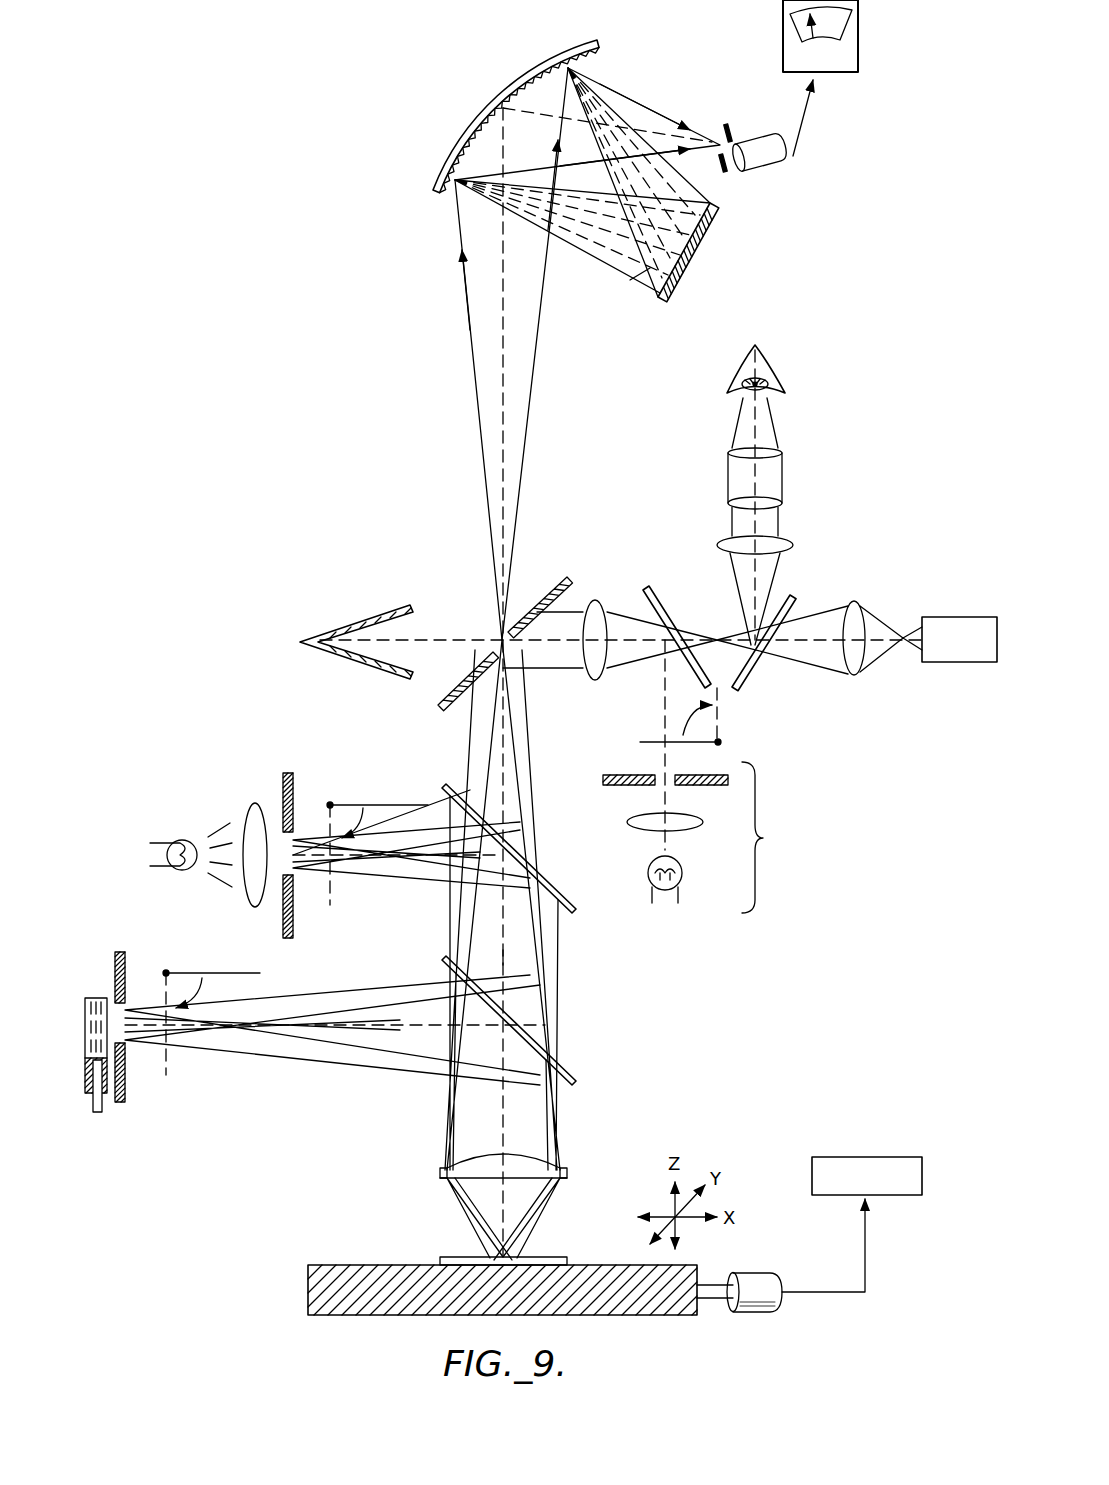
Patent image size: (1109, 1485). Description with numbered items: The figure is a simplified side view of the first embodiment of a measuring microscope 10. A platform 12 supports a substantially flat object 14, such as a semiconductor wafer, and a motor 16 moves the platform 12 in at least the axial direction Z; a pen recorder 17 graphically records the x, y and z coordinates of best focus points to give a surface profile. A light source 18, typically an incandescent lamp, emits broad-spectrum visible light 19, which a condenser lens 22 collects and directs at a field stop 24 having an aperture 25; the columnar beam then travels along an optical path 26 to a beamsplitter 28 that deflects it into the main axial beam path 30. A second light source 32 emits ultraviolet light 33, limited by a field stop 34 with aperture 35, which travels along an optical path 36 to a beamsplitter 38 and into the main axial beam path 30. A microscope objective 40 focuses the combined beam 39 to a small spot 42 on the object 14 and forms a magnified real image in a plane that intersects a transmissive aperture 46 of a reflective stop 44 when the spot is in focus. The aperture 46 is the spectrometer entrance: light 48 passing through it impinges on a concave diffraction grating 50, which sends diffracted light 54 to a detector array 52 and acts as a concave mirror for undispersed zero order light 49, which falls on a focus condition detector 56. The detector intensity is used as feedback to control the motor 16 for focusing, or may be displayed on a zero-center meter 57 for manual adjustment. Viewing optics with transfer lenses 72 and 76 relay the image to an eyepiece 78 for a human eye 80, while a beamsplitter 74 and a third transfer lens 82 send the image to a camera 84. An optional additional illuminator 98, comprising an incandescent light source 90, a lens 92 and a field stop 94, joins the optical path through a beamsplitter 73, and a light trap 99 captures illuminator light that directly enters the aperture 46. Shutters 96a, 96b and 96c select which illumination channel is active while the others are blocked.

The measuring microscope 10 is at (222, 118).
The platform 12 is at (365, 1265).
The object 14 is at (450, 1257).
The motor 16 is at (760, 1273).
The pen recorder 17 is at (922, 1181).
The light source 18 is at (173, 843).
The visible light 19 is at (218, 826).
The condenser lens 22 is at (251, 808).
The field stop 24 is at (288, 773).
The aperture 25 is at (276, 878).
The optical path 26 is at (355, 862).
The beamsplitter 28 is at (562, 900).
The main axial beam path 30 is at (503, 352).
The second light source 32 is at (98, 998).
The ultraviolet light 33 is at (215, 1052).
The field stop 34 is at (120, 952).
The aperture 35 is at (135, 1052).
The optical path 36 is at (295, 1027).
The beamsplitter 38 is at (567, 1078).
The combined light beam 39 is at (556, 1115).
The microscope objective 40 is at (567, 1177).
The illuminated spot 42 is at (515, 1256).
The reflective stop 44 is at (440, 707).
The transmissive aperture 46 is at (496, 630).
The light passing through aperture 48 is at (479, 442).
The zero order light 49 is at (688, 130).
The diffraction grating 50 is at (515, 80).
The detector array 52 is at (722, 204).
The diffracted light 54 is at (640, 275).
The focus condition detector 56 is at (738, 125).
The zero-center meter 57 is at (858, 12).
The transfer lens 72 is at (596, 602).
The beamsplitter 73 is at (662, 603).
The beamsplitter 74 is at (748, 680).
The transfer lens 76 is at (790, 543).
The eyepiece 78 is at (783, 479).
The human eye 80 is at (772, 381).
The third transfer lens 82 is at (858, 675).
The camera 84 is at (942, 617).
The incandescent light source 90 is at (683, 876).
The lens 92 is at (698, 828).
The field stop 94 is at (708, 786).
The shutter 96a is at (236, 972).
The shutter 96b is at (400, 803).
The shutter 96c is at (648, 740).
The additional illuminator 98 is at (775, 837).
The light trap 99 is at (358, 620).